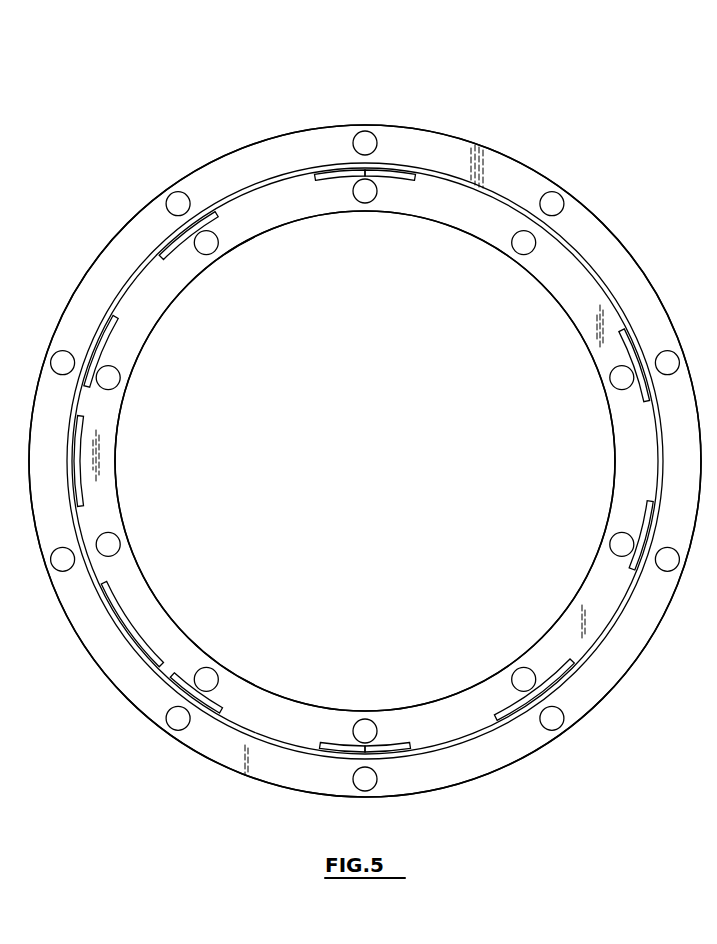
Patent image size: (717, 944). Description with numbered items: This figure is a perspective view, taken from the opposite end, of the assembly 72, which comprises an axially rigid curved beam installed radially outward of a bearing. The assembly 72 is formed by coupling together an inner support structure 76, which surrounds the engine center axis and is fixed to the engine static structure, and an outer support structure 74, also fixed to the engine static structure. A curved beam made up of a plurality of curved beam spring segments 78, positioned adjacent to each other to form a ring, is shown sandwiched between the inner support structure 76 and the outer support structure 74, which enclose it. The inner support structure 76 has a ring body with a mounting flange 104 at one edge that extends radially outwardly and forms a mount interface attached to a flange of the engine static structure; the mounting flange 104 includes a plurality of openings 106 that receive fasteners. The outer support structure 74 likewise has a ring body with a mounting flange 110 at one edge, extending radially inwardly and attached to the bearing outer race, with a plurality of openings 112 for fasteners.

The assembly 72 is at (533, 128).
The outer support structure 74 is at (258, 234).
The inner support structure 76 is at (264, 141).
The curved beam spring segments 78 is at (598, 282).
The mounting flange 104 is at (128, 250).
The openings 106 is at (548, 202).
The mounting flange 110 is at (284, 722).
The openings 112 is at (205, 679).